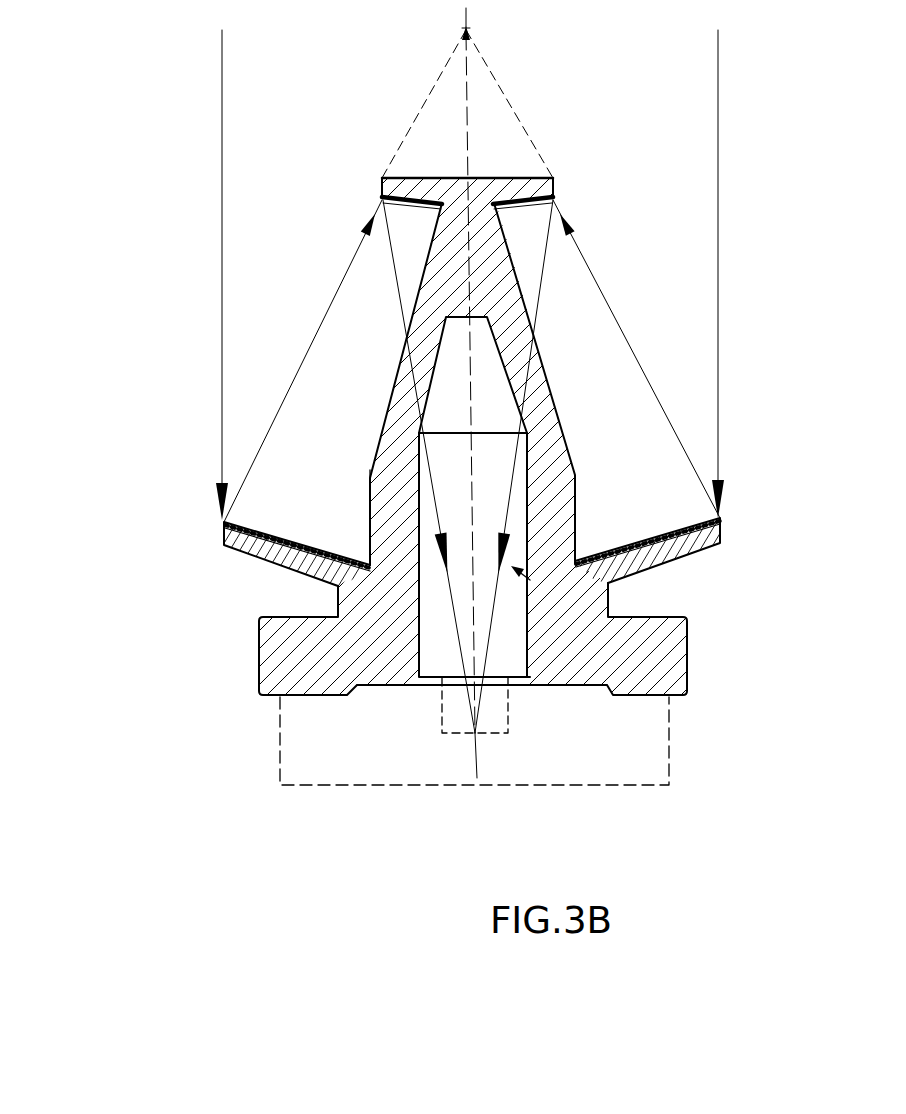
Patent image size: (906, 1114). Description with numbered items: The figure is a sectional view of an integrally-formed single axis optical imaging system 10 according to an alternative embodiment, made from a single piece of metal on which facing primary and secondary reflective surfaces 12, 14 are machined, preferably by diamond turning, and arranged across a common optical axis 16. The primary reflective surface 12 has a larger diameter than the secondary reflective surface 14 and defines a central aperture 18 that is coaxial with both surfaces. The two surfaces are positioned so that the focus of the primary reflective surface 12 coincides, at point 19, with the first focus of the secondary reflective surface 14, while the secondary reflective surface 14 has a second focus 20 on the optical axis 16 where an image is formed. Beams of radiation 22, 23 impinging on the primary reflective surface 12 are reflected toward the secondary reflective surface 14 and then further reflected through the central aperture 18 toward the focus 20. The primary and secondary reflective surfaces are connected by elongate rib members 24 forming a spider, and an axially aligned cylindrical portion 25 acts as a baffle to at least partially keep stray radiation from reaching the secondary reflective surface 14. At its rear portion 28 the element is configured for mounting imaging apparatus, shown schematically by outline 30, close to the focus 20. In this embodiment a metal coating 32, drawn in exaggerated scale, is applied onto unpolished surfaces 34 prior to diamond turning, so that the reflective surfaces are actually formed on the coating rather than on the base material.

The integrally-formed single axis optical imaging system 10 is at (453, 481).
The primary reflective surface 12 is at (620, 548).
The secondary reflective surface 14 is at (553, 208).
The optical axis 16 is at (466, 87).
The central aperture 18 is at (578, 525).
The point 19 is at (468, 29).
The second focus 20 is at (475, 735).
The beam of radiation 22 is at (222, 284).
The beam of radiation 23 is at (718, 283).
The elongate rib members 24 is at (405, 365).
The cylindrical portion 25 is at (368, 486).
The rear portion 28 is at (530, 708).
The outline 30 is at (280, 740).
The metal coating 32 is at (400, 205).
The unpolished surfaces 34 is at (400, 258).